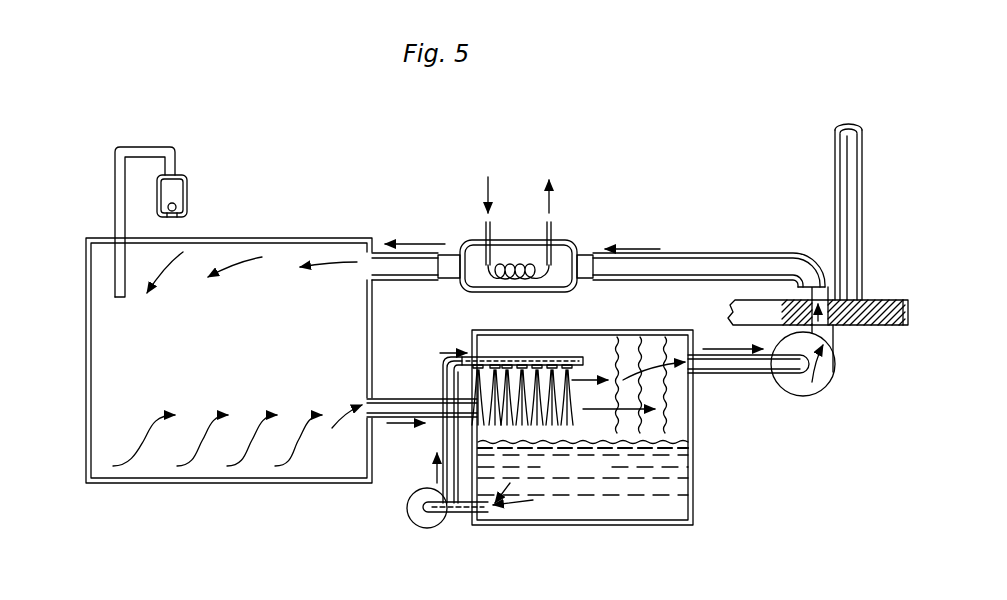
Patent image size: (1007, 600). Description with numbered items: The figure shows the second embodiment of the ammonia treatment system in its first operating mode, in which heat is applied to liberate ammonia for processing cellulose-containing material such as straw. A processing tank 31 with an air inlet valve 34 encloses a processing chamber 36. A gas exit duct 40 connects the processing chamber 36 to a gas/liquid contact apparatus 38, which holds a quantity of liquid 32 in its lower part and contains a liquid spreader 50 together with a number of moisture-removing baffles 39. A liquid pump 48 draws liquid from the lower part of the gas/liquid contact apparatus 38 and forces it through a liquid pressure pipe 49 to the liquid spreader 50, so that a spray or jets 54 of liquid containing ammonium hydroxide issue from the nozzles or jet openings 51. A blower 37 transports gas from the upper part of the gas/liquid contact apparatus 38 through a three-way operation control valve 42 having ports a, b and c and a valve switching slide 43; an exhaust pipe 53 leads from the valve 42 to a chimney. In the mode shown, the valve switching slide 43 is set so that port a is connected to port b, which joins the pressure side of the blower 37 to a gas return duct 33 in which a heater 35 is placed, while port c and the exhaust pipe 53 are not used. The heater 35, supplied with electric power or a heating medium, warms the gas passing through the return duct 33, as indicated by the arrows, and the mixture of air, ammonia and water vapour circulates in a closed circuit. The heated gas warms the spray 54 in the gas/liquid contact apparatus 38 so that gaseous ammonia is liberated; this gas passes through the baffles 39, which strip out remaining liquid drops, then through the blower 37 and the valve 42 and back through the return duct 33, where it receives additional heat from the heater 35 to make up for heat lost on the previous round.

The processing tank 31 is at (87, 368).
The liquid 32 is at (680, 505).
The gas return duct 33 is at (665, 263).
The air inlet valve 34 is at (188, 195).
The heater 35 is at (540, 262).
The processing chamber 36 is at (273, 255).
The blower 37 is at (827, 373).
The gas/liquid contact apparatus 38 is at (688, 455).
The moisture-removing baffles 39 is at (680, 398).
The gas exit duct 40 is at (382, 403).
The three-way operation control valve 42 is at (911, 329).
The valve switching slide 43 is at (910, 312).
The liquid pump 48 is at (428, 520).
The liquid pressure pipe 49 is at (440, 445).
The liquid spreader 50 is at (487, 357).
The nozzles or jet openings 51 is at (517, 363).
The exhaust pipe 53 is at (847, 185).
The spray or jets of liquid 54 is at (587, 367).
The port a is at (842, 331).
The port b is at (810, 253).
The port c is at (868, 280).